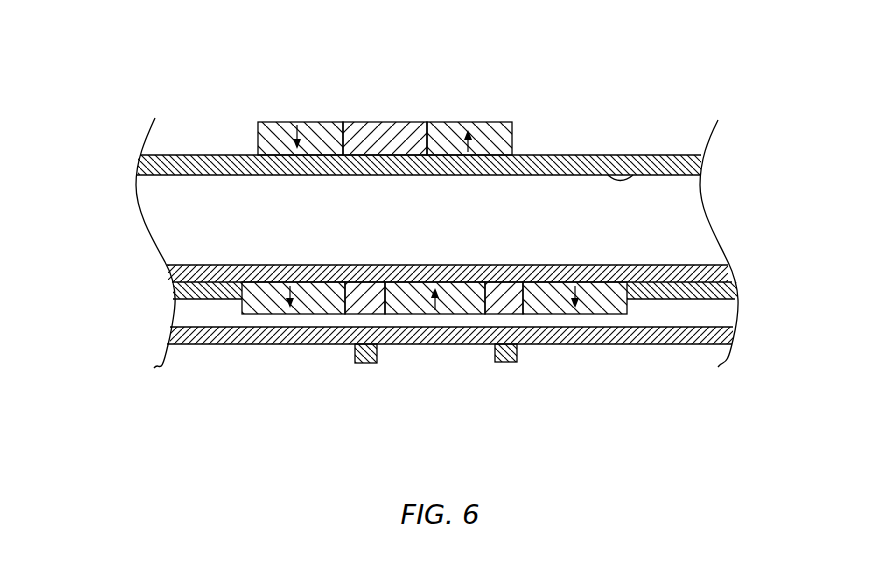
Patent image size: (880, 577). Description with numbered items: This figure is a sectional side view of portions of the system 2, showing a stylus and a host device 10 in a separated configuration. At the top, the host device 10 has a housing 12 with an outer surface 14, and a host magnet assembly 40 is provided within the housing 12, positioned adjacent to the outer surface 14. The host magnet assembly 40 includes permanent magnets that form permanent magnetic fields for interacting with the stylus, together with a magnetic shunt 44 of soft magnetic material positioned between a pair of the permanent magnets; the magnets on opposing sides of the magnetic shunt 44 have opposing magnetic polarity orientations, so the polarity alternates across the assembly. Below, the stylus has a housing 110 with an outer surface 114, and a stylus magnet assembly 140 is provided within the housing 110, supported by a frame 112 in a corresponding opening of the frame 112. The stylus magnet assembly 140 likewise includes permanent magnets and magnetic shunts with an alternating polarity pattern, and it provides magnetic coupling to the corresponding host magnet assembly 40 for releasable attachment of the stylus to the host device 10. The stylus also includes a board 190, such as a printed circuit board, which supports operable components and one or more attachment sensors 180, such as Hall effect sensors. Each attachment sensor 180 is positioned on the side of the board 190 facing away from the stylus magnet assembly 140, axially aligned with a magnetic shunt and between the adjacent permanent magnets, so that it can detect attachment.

The system 2 is at (122, 33).
The host device 10 is at (160, 154).
The housing 12 is at (555, 155).
The outer surface 14 is at (634, 176).
The host magnet assembly 40 is at (357, 109).
The magnetic shunt 44 is at (377, 122).
The housing 110 is at (198, 264).
The frame 112 is at (170, 290).
The outer surface 114 is at (705, 265).
The stylus magnet assembly 140 is at (404, 339).
The attachment sensor 180 is at (366, 363).
The board 190 is at (266, 345).